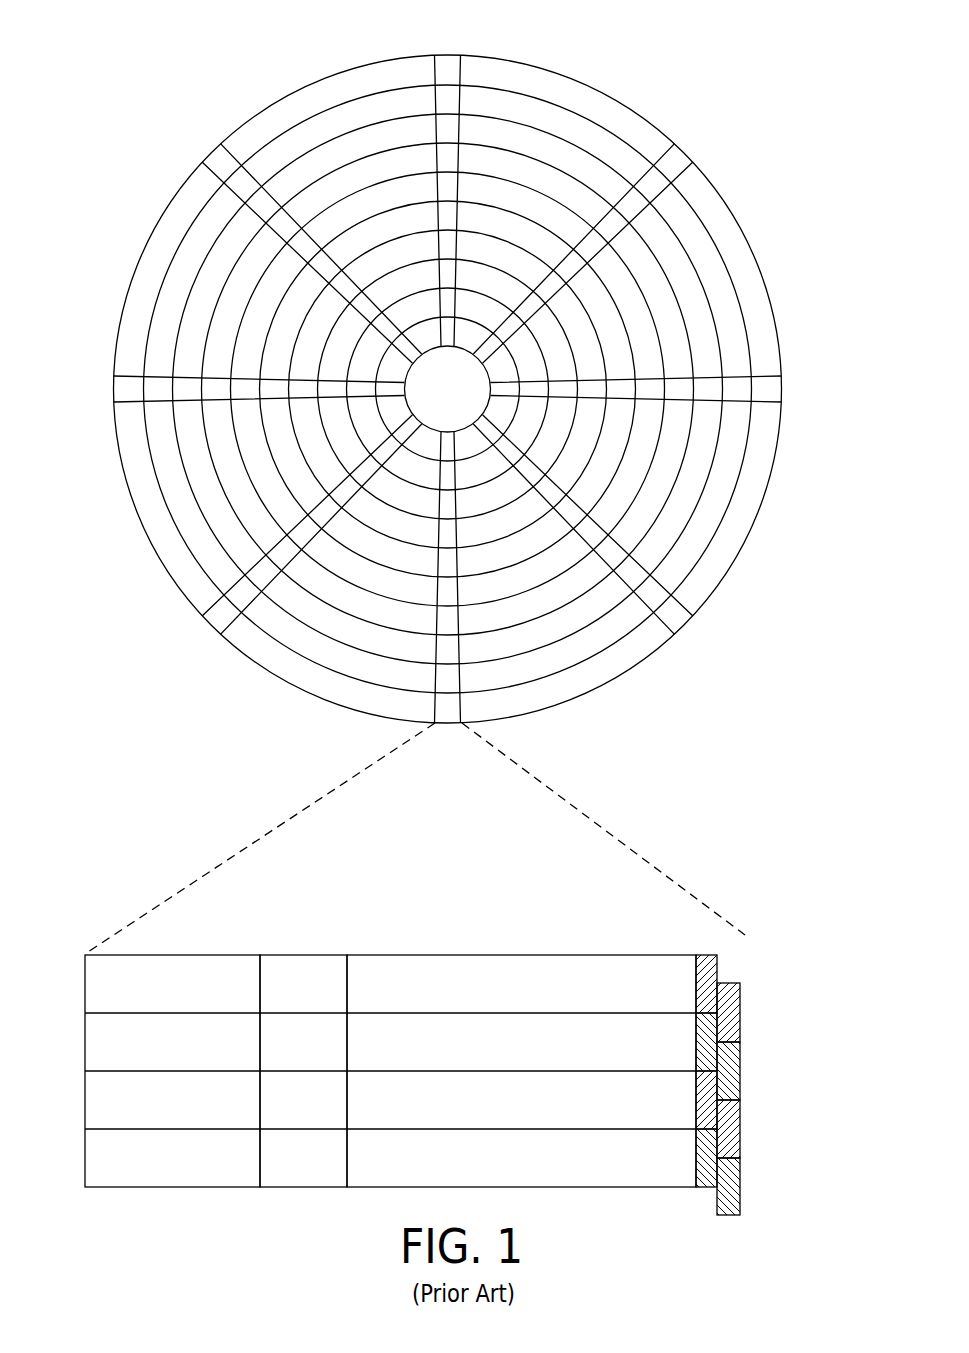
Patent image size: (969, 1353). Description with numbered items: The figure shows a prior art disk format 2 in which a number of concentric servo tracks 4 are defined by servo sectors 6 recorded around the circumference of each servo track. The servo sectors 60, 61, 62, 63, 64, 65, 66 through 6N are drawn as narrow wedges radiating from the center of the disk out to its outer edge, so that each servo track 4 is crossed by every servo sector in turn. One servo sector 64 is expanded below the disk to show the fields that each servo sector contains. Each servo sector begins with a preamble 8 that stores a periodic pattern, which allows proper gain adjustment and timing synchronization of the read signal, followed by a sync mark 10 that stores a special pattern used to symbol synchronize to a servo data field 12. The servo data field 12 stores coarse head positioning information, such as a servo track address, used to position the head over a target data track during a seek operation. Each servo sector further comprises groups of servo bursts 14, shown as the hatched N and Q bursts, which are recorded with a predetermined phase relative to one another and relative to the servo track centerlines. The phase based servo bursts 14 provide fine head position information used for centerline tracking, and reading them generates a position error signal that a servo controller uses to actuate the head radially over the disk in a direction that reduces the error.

The disk format 2 is at (198, 56).
The servo track 4 is at (563, 121).
The servo sector 6 is at (449, 400).
The servo sector 60 is at (449, 68).
The servo sector 61 is at (680, 160).
The servo sector 62 is at (779, 390).
The servo sector 63 is at (675, 618).
The servo sector 64 is at (298, 798).
The servo sector 65 is at (218, 618).
The servo sector 66 is at (120, 388).
The servo sector 6N is at (222, 150).
The preamble 8 is at (182, 953).
The sync mark 10 is at (306, 953).
The servo data field 12 is at (508, 953).
The servo bursts 14 is at (742, 945).